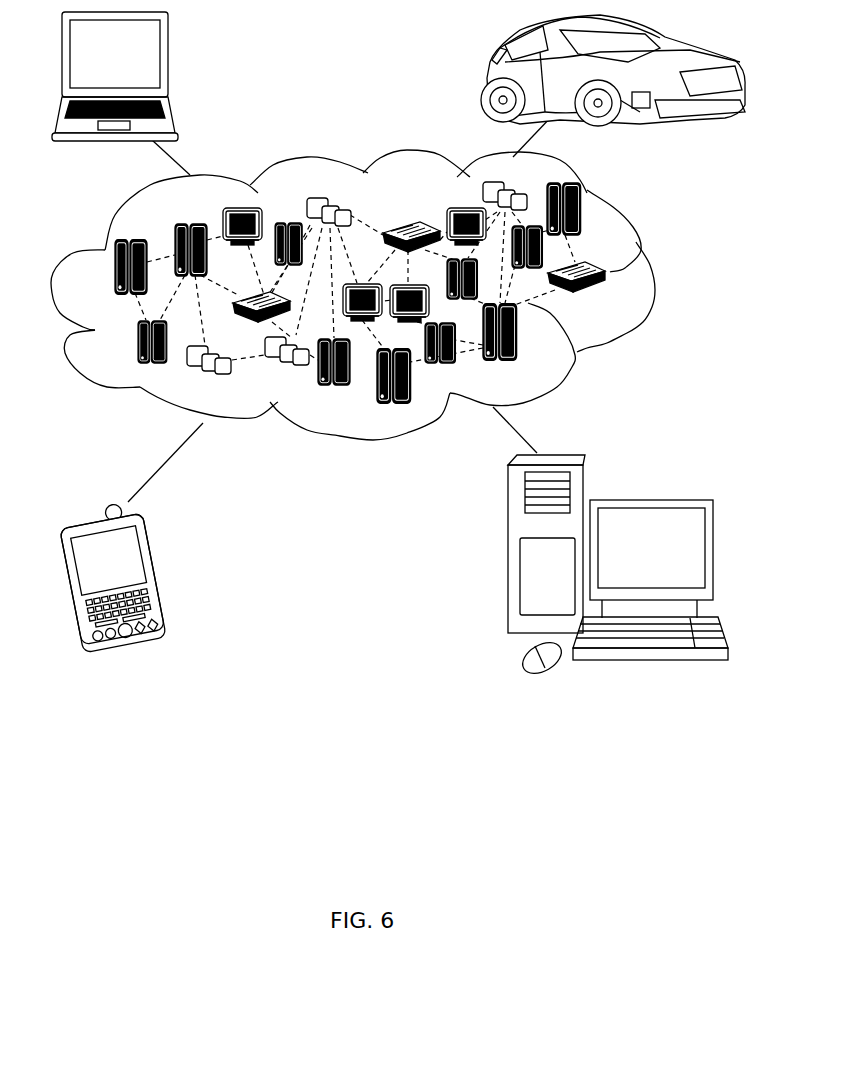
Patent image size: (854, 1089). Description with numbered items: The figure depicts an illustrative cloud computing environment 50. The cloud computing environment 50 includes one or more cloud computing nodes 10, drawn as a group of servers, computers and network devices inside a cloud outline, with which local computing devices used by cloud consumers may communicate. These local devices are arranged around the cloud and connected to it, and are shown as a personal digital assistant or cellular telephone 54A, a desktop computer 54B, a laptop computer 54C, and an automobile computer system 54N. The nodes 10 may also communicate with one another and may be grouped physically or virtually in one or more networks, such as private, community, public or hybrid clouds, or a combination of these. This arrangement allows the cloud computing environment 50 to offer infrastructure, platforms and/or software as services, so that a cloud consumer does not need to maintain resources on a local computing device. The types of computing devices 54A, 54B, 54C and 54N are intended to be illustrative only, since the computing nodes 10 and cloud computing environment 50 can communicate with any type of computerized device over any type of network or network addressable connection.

The cloud computing nodes 10 is at (610, 301).
The cloud computing environment 50 is at (650, 273).
The personal digital assistant (PDA) or cellular telephone 54A is at (160, 573).
The desktop computer 54B is at (647, 500).
The laptop computer 54C is at (168, 59).
The automobile computer system 54N is at (492, 74).